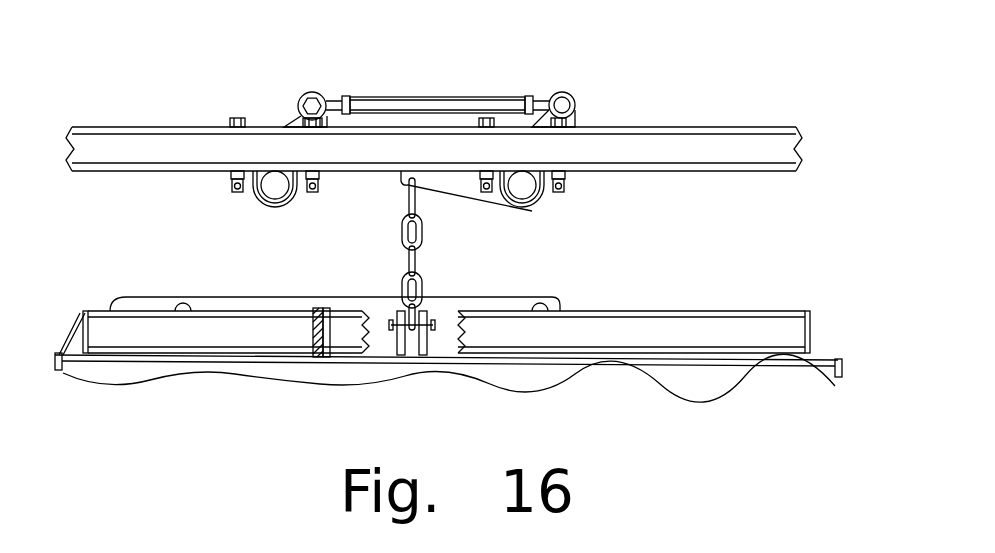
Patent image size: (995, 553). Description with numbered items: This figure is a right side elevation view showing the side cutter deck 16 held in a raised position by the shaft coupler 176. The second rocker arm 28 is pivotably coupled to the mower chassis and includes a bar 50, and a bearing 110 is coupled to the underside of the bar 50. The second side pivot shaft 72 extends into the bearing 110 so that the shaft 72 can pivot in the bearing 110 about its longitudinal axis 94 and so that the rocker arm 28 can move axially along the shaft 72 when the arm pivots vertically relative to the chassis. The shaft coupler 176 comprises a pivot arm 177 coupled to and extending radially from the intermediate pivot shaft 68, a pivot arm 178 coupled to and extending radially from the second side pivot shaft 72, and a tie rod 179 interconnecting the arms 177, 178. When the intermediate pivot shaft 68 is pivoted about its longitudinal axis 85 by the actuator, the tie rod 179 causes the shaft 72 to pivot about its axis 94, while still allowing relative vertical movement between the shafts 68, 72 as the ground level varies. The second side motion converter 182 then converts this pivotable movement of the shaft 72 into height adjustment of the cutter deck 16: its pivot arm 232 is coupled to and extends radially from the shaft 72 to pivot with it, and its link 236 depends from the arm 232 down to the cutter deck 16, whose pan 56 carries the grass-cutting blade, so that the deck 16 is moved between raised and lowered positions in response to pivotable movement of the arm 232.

The side cutter deck 16 is at (448, 326).
The second rocker arm 28 is at (439, 128).
The bar 50 is at (439, 129).
The pan 56 is at (446, 318).
The intermediate pivot shaft 68 is at (273, 186).
The second side pivot shaft 72 is at (539, 187).
The longitudinal axis 85 is at (257, 165).
The longitudinal axis 94 is at (542, 166).
The bearing 110 is at (575, 181).
The shaft coupler 176 is at (438, 63).
The pivot arm 177 is at (282, 96).
The pivot arm 178 is at (586, 108).
The tie rod 179 is at (437, 72).
The second side motion converter 182 is at (527, 263).
The pivot arm 232 is at (466, 211).
The link 236 is at (444, 254).